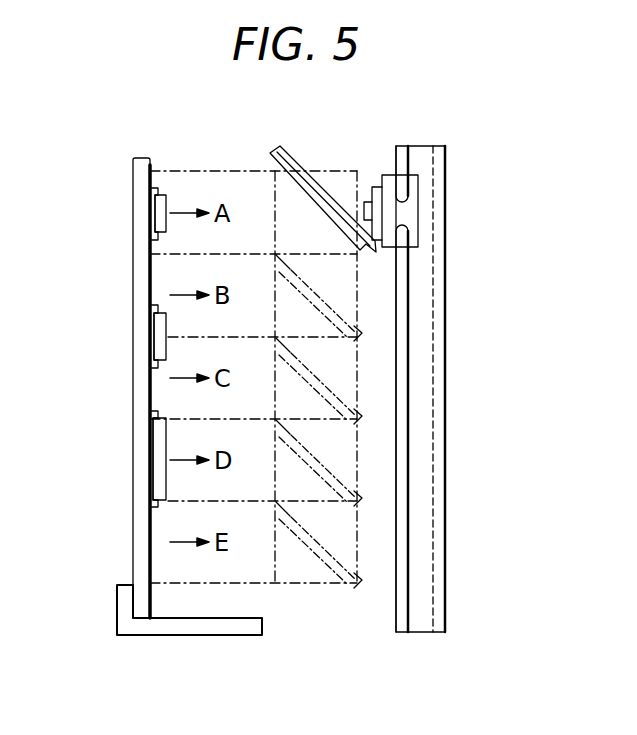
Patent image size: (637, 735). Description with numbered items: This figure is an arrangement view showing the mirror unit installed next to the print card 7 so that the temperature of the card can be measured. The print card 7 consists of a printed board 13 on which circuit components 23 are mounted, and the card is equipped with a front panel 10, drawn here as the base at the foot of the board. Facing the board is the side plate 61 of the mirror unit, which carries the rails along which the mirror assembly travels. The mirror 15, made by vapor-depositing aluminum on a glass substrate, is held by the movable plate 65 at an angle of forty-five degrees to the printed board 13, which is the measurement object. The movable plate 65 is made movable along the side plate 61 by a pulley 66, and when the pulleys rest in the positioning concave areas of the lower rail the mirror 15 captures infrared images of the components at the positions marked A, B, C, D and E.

The print card 7 is at (133, 176).
The front panel 10 is at (185, 636).
The printed board 13 is at (133, 548).
The mirror 15 is at (291, 199).
The circuit component 23 is at (158, 215).
The side plate 61 is at (447, 385).
The movable plate 65 is at (298, 160).
The pulley 66 is at (405, 212).